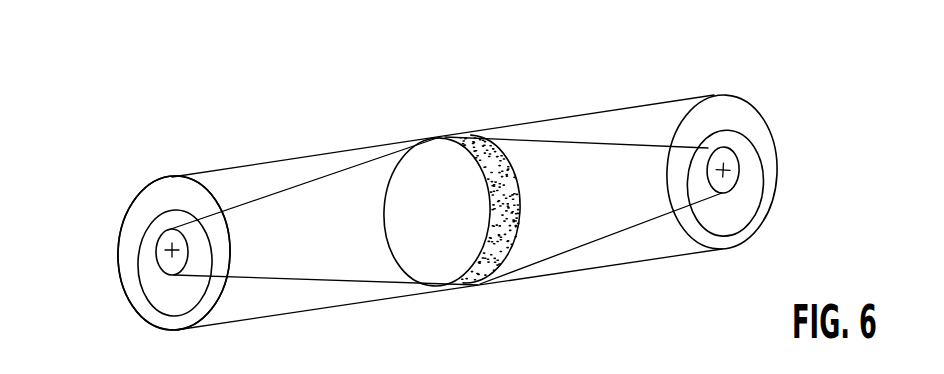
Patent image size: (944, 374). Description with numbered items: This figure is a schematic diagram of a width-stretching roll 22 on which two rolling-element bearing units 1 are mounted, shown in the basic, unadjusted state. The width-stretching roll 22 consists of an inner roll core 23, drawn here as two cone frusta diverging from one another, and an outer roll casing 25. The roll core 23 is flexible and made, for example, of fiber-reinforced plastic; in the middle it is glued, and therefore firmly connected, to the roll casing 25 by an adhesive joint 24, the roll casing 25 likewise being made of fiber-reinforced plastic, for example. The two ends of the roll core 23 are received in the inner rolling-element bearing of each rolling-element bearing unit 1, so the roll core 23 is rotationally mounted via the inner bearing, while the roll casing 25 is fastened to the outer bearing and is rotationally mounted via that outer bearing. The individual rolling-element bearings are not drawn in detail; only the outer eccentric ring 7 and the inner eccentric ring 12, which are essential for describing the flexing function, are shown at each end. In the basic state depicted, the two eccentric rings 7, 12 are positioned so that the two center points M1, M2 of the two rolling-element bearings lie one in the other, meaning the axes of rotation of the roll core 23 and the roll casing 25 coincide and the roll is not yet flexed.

The rolling-element bearing unit 1 is at (112, 203).
The outer eccentric ring 7 is at (155, 190).
The inner eccentric ring 12 is at (157, 292).
The center point M1 is at (160, 248).
The center point M2 is at (172, 252).
The width-stretching roll 22 is at (526, 76).
The roll core 23 is at (325, 205).
The adhesive joint 24 is at (493, 258).
The roll casing 25 is at (280, 297).